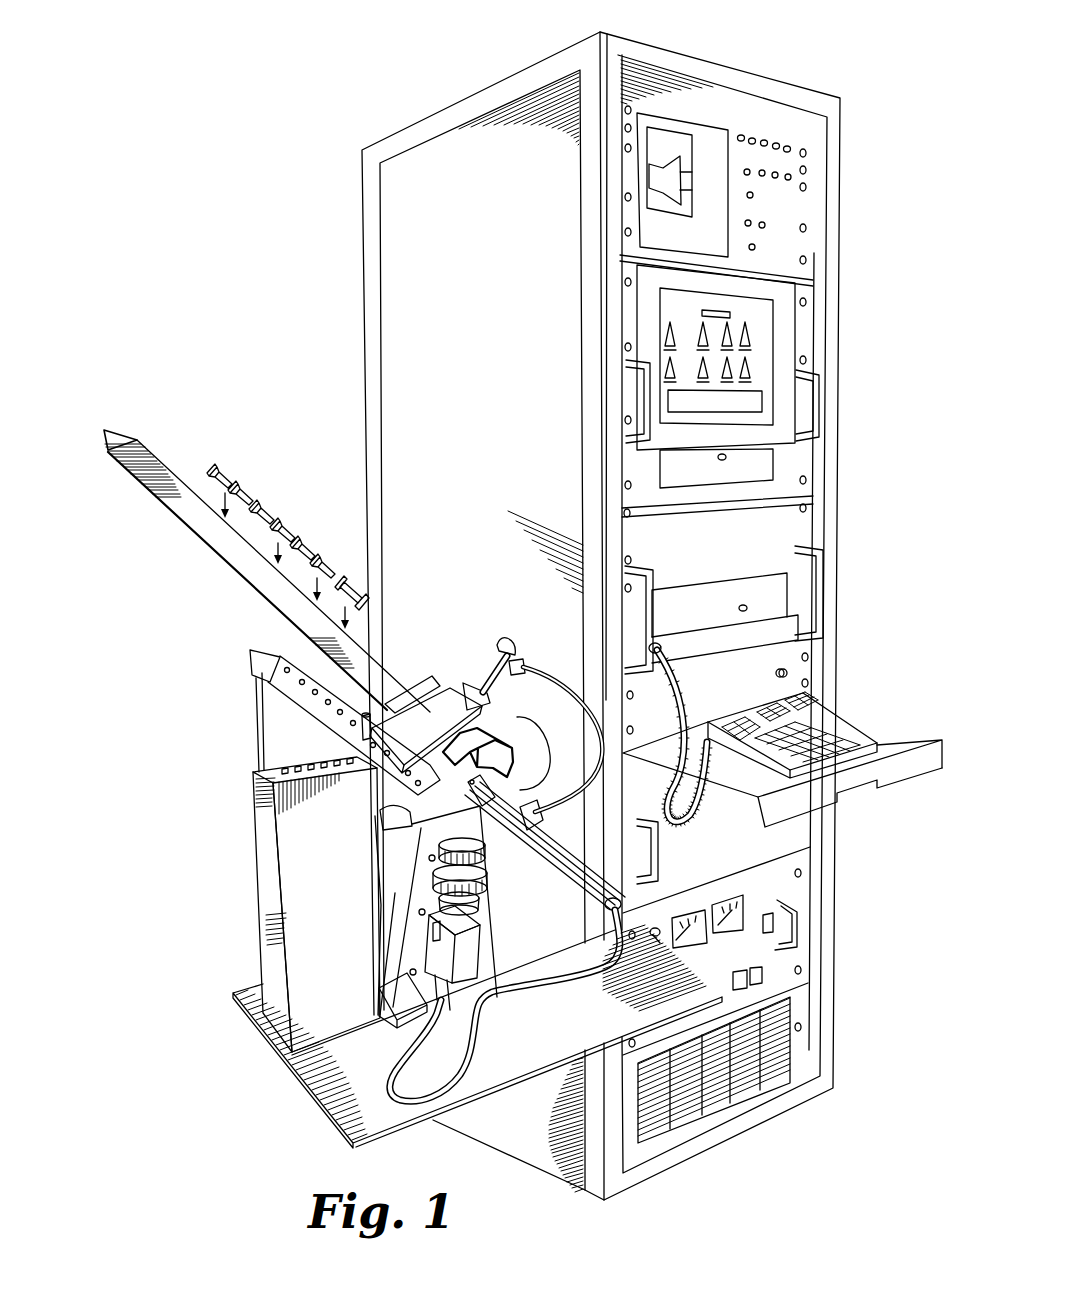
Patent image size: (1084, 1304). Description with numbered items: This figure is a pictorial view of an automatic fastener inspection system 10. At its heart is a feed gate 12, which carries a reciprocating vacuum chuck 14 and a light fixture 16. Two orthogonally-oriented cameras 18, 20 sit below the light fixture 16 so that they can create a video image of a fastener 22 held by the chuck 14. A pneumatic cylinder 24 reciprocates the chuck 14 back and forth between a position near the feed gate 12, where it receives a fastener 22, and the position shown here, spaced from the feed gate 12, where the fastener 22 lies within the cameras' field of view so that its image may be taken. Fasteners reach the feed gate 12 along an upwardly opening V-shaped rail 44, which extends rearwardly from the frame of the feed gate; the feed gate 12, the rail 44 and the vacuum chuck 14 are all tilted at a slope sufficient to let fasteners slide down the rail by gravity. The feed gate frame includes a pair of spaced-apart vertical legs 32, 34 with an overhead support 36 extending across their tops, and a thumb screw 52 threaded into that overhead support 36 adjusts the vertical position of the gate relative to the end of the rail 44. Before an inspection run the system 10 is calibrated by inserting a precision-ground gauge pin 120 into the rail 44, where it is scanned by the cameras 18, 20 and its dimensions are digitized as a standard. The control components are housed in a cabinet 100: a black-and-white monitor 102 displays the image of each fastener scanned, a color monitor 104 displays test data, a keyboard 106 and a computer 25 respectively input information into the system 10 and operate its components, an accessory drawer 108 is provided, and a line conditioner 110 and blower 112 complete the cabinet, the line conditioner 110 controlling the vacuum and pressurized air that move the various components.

The automatic fastener inspection system 10 is at (304, 460).
The feed gate 12 is at (432, 680).
The reciprocating vacuum chuck 14 is at (543, 833).
The light fixture 16 is at (517, 700).
The camera 18 is at (488, 864).
The camera 20 is at (378, 813).
The fastener 22 is at (222, 473).
The pneumatic cylinder 24 is at (590, 886).
The computer 25 is at (790, 527).
The vertical leg 32 is at (425, 703).
The vertical leg 34 is at (265, 751).
The overhead support 36 is at (455, 702).
The rail 44 is at (230, 553).
The thumb screw 52 is at (497, 638).
The cabinet 100 is at (425, 322).
The black-and-white monitor 102 is at (710, 148).
The color monitor 104 is at (787, 342).
The keyboard 106 is at (832, 712).
The accessory drawer 108 is at (790, 834).
The line conditioner 110 is at (800, 957).
The blower 112 is at (812, 1058).
The gauge pin 120 is at (353, 593).